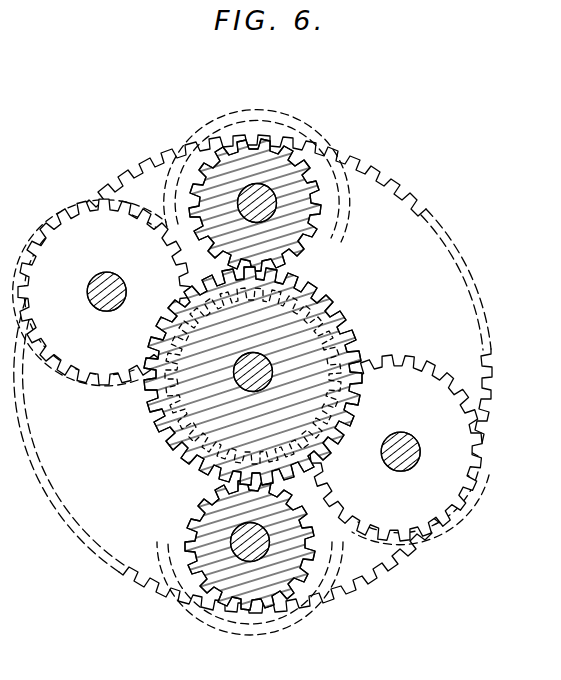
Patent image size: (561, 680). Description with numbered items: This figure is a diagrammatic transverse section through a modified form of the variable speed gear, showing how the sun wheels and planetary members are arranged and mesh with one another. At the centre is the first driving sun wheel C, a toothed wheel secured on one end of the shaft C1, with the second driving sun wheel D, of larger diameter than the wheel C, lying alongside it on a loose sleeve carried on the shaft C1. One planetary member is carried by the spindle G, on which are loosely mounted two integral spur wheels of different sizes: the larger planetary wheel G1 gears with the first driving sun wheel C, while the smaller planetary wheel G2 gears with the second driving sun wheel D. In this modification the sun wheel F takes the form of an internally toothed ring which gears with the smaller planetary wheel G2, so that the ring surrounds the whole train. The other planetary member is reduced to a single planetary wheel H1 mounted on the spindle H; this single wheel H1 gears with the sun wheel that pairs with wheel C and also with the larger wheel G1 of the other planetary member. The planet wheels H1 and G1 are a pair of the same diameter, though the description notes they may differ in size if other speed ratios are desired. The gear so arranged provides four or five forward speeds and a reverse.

The sun wheel F is at (420, 210).
The spindle G is at (266, 192).
The larger planetary wheel G1 is at (257, 116).
The smaller planetary wheel G2 is at (318, 153).
The spindle H is at (109, 274).
The single planetary wheel H1 is at (60, 222).
The first driving sun wheel C is at (347, 330).
The shaft C1 is at (233, 385).
The second driving sun wheel D is at (160, 396).